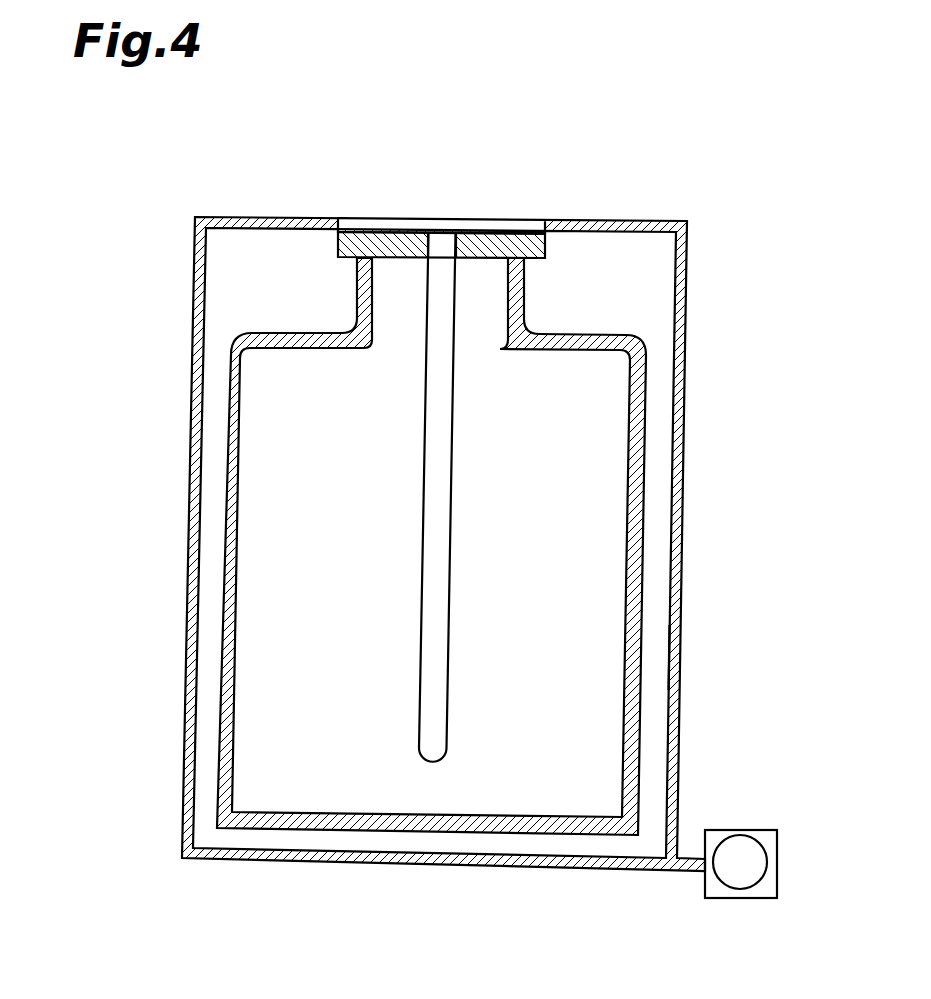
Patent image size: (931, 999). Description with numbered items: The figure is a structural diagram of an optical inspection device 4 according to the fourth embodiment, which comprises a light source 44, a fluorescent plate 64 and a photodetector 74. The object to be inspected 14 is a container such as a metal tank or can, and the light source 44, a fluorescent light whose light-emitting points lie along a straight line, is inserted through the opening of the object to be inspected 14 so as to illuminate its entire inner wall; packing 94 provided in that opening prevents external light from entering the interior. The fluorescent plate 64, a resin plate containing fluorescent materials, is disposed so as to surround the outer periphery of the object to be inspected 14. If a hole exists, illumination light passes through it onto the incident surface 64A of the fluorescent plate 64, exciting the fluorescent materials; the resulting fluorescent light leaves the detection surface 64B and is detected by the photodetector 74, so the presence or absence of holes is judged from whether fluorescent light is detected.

The optical inspection device 4 is at (653, 122).
The object to be inspected 14 is at (644, 341).
The light source 44 is at (453, 508).
The fluorescent plate 64 is at (683, 528).
The incident surface 64A is at (668, 653).
The detection surface 64B is at (730, 852).
The photodetector 74 is at (740, 898).
The packing 94 is at (491, 233).